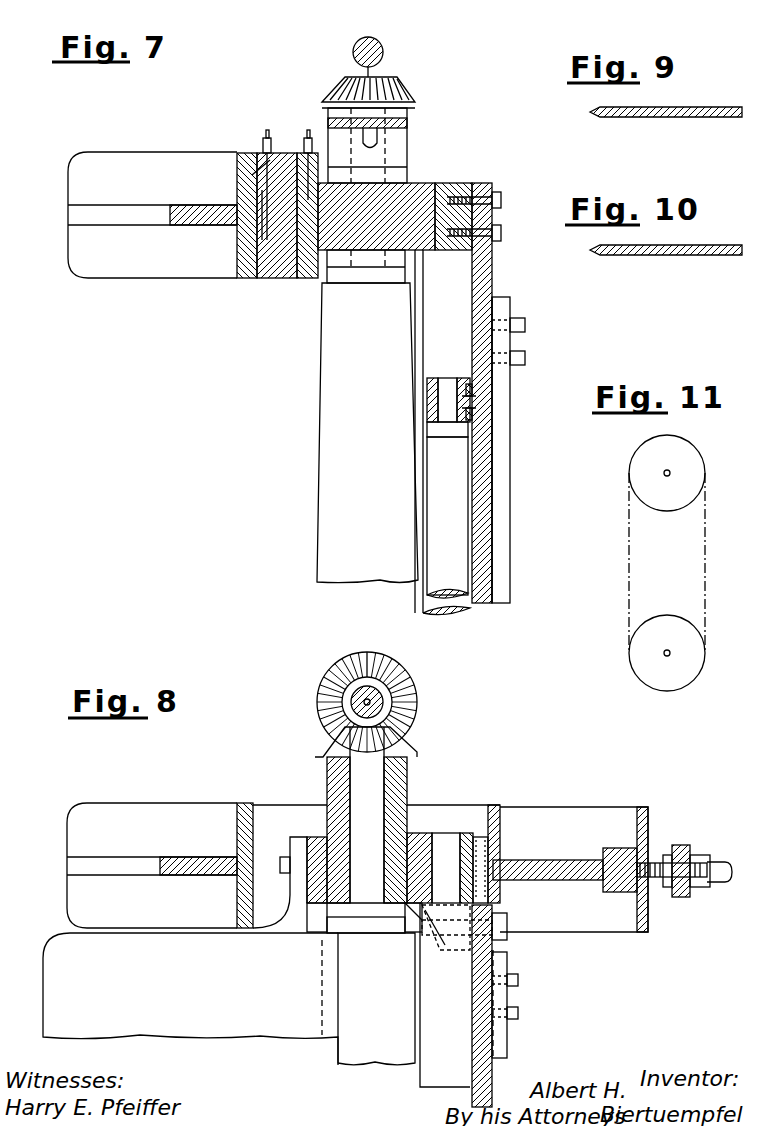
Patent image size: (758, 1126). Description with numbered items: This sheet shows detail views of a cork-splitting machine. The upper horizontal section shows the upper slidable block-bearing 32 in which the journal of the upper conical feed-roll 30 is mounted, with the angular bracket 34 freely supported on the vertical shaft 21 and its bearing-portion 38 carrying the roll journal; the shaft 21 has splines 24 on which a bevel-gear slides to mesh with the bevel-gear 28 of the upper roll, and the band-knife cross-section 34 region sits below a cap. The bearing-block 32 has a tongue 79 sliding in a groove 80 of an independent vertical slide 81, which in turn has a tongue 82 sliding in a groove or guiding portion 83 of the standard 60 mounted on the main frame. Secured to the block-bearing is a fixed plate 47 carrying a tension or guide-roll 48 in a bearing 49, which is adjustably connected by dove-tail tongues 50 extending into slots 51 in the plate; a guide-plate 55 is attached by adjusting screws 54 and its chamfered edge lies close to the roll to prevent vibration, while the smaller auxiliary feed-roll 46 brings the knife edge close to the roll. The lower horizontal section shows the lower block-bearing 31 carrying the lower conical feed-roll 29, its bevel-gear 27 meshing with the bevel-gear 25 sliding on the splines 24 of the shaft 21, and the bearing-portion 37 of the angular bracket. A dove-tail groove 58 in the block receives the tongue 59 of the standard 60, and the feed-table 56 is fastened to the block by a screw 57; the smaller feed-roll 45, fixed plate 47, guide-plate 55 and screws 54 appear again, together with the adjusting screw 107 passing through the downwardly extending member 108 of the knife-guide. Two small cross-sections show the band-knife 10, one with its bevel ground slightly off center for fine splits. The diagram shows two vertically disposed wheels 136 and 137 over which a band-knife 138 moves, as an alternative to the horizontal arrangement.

In FIG. 9, the band-knife 10 is at (676, 118).
In FIG. 10, the band-knife 10 is at (668, 255).
In FIG. 7, the vertical shaft 21 is at (376, 63).
In FIG. 8, the vertical shaft 21 is at (370, 695).
In FIG. 7, the splines 24 is at (380, 44).
In FIG. 8, the splines 24 is at (382, 700).
In FIG. 8, the bevel-gear 25 is at (317, 672).
In FIG. 8, the bevel-gear 27 is at (325, 745).
In FIG. 7, the bevel-gear 28 is at (410, 92).
In FIG. 8, the lower conical feed-roll 29 is at (372, 1048).
In FIG. 7, the upper conical feed-roll 30 is at (333, 525).
In FIG. 8, the slidable block-bearing 31 is at (417, 835).
In FIG. 7, the slidable block-bearing 32 is at (398, 172).
In FIG. 7, the angular bracket 34 is at (408, 124).
In FIG. 8, the bearing-portion 37 is at (407, 775).
In FIG. 7, the bearing-portion 38 is at (395, 178).
In FIG. 8, the smaller feed-roll 45 is at (450, 985).
In FIG. 7, the smaller feed-roll 46 is at (457, 298).
In FIG. 7, the fixed plate 47 is at (485, 605).
In FIG. 8, the fixed plate 47 is at (482, 1082).
In FIG. 7, the tension or guide-roll 48 is at (453, 493).
In FIG. 7, the bearing 49 is at (438, 375).
In FIG. 7, the dove-tail tongue 50 is at (470, 400).
In FIG. 7, the slot or groove 51 is at (470, 390).
In FIG. 7, the adjusting screw 54 is at (522, 325).
In FIG. 8, the adjusting screw 54 is at (520, 1012).
In FIG. 7, the guide-plate 55 is at (502, 543).
In FIG. 8, the guide-plate 55 is at (482, 1052).
In FIG. 8, the feed-table 56 is at (65, 945).
In FIG. 8, the screw or bolt 57 is at (280, 860).
In FIG. 8, the dove-tail groove 58 is at (497, 862).
In FIG. 8, the tongue or projection 59 is at (505, 825).
In FIG. 7, the standard 60 is at (107, 162).
In FIG. 8, the standard 60 is at (212, 805).
In FIG. 7, the tongue 79 is at (300, 280).
In FIG. 7, the groove 80 is at (278, 280).
In FIG. 7, the vertical slide 81 is at (290, 153).
In FIG. 7, the tongue 82 is at (237, 280).
In FIG. 7, the groove or guiding portion 83 is at (250, 172).
In FIG. 8, the adjusting screw 107 is at (706, 885).
In FIG. 8, the downwardly extending member 108 is at (690, 848).
In FIG. 11, the wheel or roller 136 is at (640, 473).
In FIG. 11, the wheel or roller 137 is at (640, 653).
In FIG. 11, the band-knife 138 is at (638, 565).